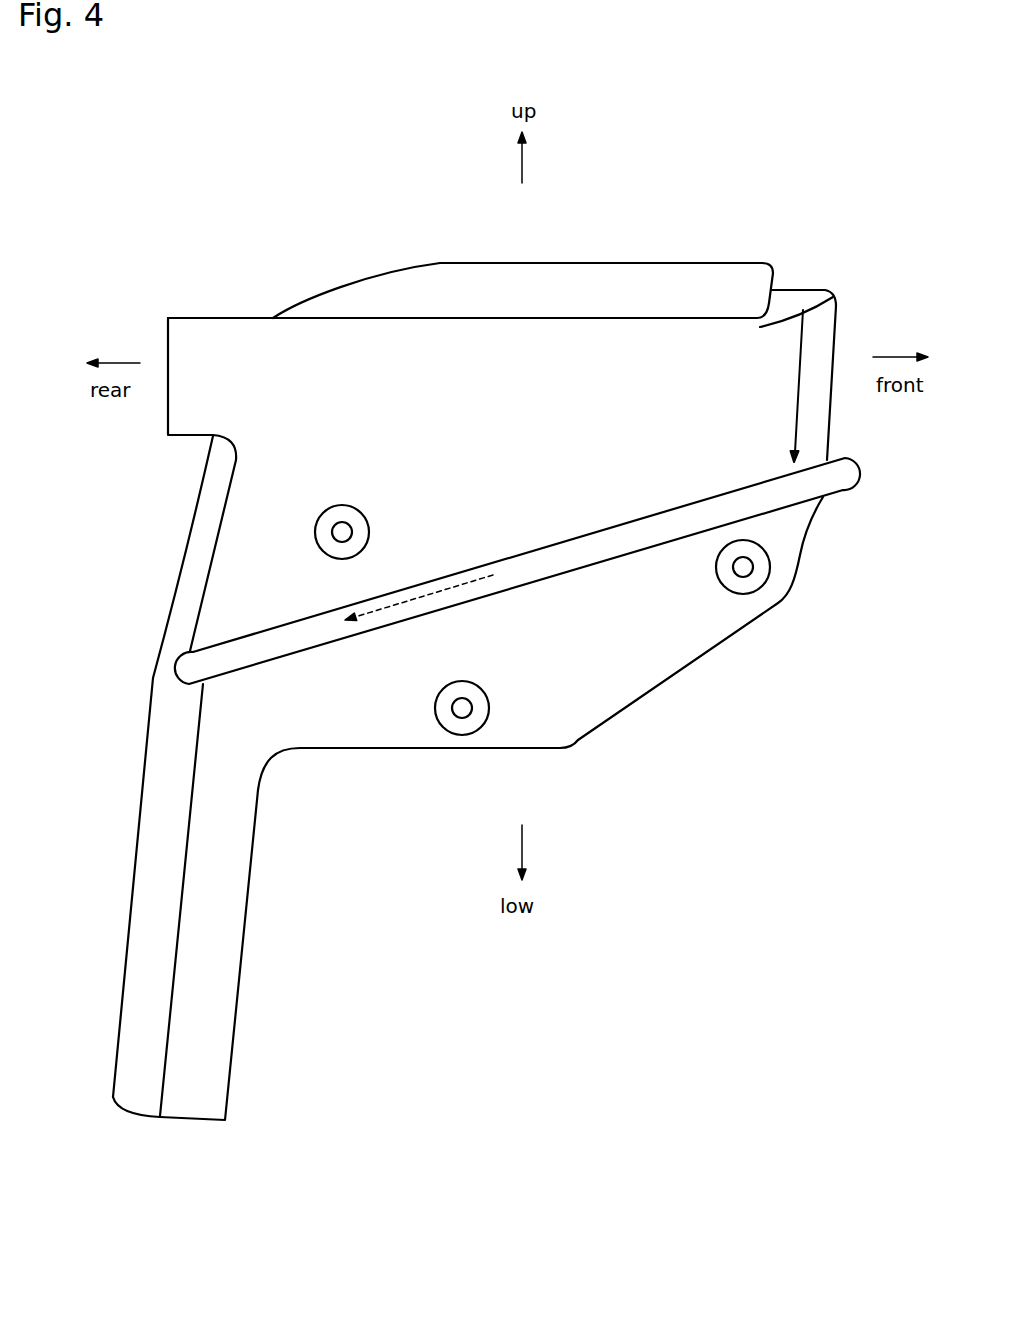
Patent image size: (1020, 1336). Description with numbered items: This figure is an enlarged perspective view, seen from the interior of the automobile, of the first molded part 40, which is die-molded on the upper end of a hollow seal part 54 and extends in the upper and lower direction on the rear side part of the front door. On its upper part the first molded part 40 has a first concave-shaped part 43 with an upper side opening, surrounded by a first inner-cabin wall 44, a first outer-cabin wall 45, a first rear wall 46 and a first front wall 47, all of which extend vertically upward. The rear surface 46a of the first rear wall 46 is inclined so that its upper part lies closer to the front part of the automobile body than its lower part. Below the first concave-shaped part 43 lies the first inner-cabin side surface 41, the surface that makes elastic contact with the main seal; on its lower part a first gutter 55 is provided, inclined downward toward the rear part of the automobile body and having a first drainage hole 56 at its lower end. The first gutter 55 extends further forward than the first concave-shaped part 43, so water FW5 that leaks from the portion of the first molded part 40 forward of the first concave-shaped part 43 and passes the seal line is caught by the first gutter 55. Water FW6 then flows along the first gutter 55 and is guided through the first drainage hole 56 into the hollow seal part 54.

The first molded part 40 is at (815, 195).
The first inner-cabin side surface 41 is at (490, 387).
The first concave-shaped part 43 is at (470, 249).
The first inner-cabin wall 44 is at (665, 278).
The first outer-cabin wall 45 is at (573, 263).
The first rear wall 46 is at (337, 259).
The rear surface 46a is at (352, 280).
The first front wall 47 is at (786, 268).
The hollow seal part 54 is at (149, 778).
The first gutter 55 is at (597, 550).
The first drainage hole 56 is at (153, 680).
The water FW5 is at (800, 412).
The water FW6 is at (410, 597).